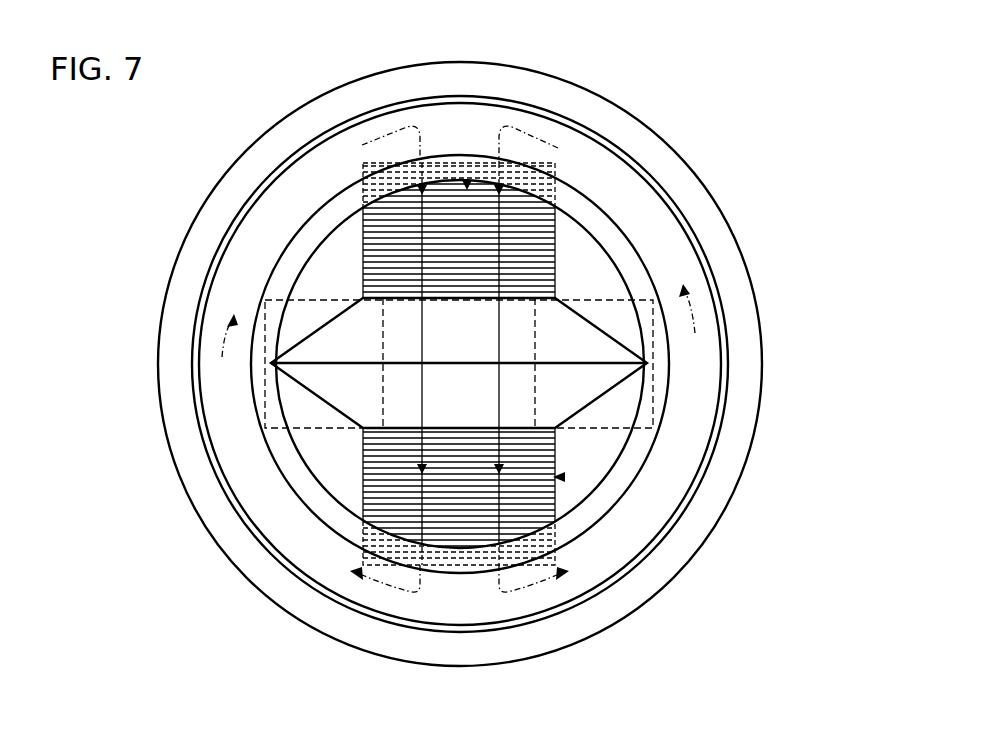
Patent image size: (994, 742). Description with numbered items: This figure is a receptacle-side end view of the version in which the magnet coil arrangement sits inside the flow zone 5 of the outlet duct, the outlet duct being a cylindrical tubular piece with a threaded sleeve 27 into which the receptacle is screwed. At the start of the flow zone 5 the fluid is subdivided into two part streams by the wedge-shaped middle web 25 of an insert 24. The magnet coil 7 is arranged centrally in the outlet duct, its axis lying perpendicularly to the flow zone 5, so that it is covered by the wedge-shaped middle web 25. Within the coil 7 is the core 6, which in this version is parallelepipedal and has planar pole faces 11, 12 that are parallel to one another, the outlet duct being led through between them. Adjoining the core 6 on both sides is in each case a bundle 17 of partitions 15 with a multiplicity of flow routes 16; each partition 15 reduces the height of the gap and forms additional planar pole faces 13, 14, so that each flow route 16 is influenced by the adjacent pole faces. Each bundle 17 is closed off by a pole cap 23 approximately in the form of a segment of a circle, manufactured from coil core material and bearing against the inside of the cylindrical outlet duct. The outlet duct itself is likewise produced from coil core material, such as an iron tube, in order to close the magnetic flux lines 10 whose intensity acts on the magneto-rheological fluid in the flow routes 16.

The flow zone 5 is at (562, 135).
The core 6 is at (383, 418).
The magnet coil 7 is at (263, 313).
The magnetic flux lines 10 is at (420, 312).
The pole face 11 is at (447, 430).
The pole face 12 is at (520, 296).
The pole face 13 is at (377, 453).
The pole face 14 is at (555, 452).
The partition 15 is at (397, 518).
The flow route 16 is at (380, 497).
The bundle of partitions 17 is at (467, 186).
The pole cap 23 is at (462, 180).
The insert 24 is at (583, 197).
The wedge-shaped middle web 25 is at (603, 348).
The threaded sleeve 27 is at (515, 72).